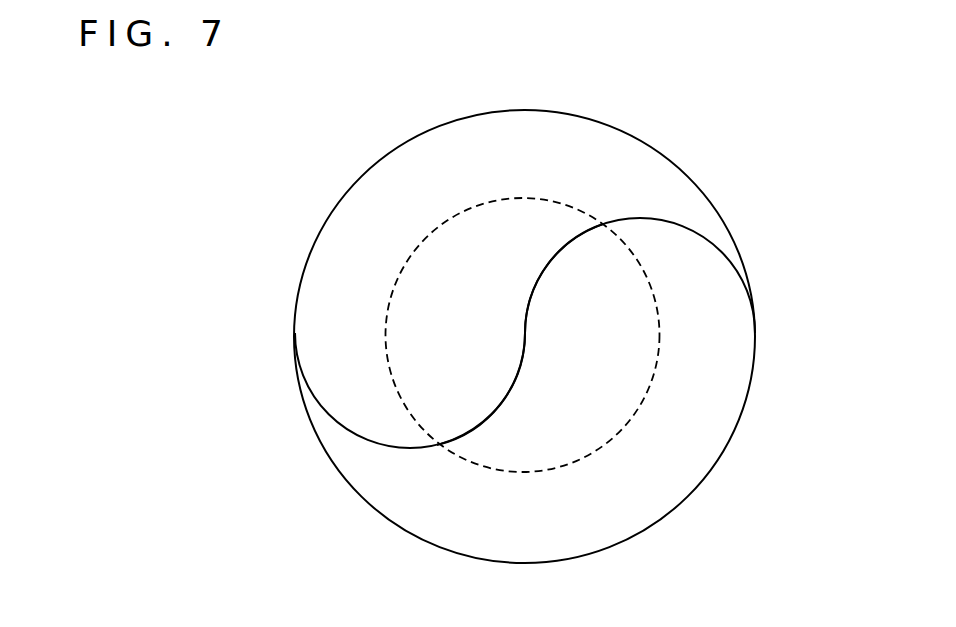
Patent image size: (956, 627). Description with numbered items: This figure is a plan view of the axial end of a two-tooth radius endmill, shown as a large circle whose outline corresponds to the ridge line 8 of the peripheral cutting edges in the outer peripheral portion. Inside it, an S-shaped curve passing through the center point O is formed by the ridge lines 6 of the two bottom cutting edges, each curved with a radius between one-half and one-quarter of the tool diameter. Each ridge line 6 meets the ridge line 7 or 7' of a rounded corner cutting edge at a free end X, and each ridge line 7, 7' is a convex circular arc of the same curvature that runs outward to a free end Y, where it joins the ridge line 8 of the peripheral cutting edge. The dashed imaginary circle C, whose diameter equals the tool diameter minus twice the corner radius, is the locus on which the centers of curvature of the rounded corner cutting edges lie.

The ridge line of bottom cutting edge 6 is at (537, 278).
The ridge line of rounded corner cutting edge 7 is at (410, 426).
The ridge line of rounded corner cutting edge 7' is at (640, 243).
The ridge line of peripheral cutting edge 8 is at (688, 493).
The imaginary circle C is at (400, 272).
The free end X is at (437, 443).
The center point O is at (525, 333).
The free end Y is at (293, 334).